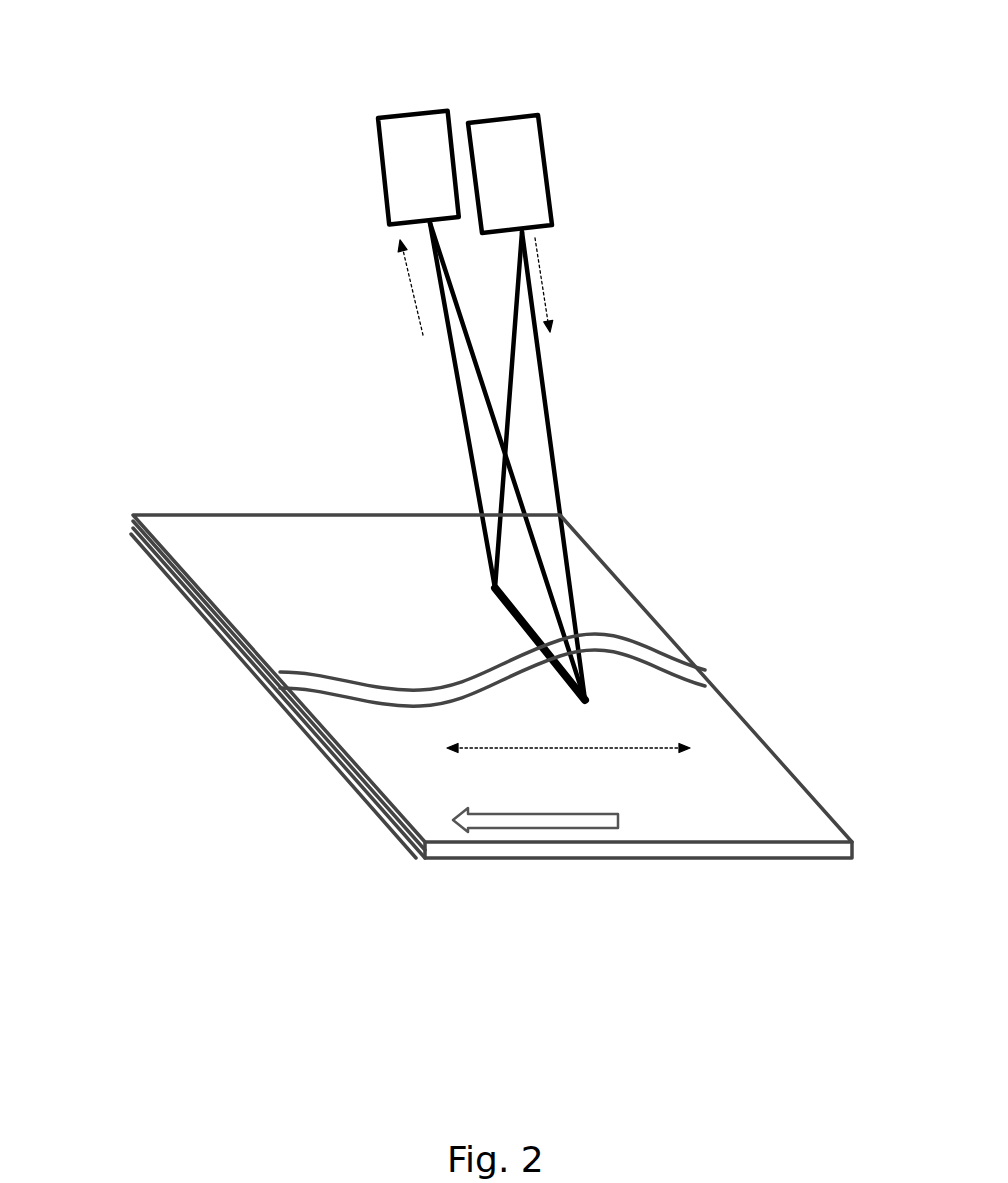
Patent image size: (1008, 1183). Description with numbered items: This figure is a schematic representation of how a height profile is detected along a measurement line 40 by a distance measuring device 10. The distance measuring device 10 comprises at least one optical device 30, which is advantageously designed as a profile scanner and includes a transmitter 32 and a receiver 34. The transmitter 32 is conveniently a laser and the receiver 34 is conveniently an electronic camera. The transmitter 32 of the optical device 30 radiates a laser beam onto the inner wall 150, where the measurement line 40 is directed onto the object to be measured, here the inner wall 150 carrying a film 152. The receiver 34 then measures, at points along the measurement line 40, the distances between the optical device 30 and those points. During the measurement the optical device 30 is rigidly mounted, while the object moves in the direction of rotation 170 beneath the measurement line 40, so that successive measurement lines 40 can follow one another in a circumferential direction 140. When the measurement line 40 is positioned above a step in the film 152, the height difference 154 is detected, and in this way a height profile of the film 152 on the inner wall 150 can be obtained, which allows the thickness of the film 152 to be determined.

The distance measuring device 10 is at (630, 286).
The optical device 30 is at (312, 178).
The transmitter 32 is at (492, 120).
The receiver 34 is at (400, 113).
The measurement line 40 is at (525, 632).
The circumferential direction 140 is at (590, 752).
The inner wall 150 is at (268, 713).
The film 152 is at (296, 532).
The height difference 154 is at (574, 638).
The direction of rotation 170 is at (538, 826).